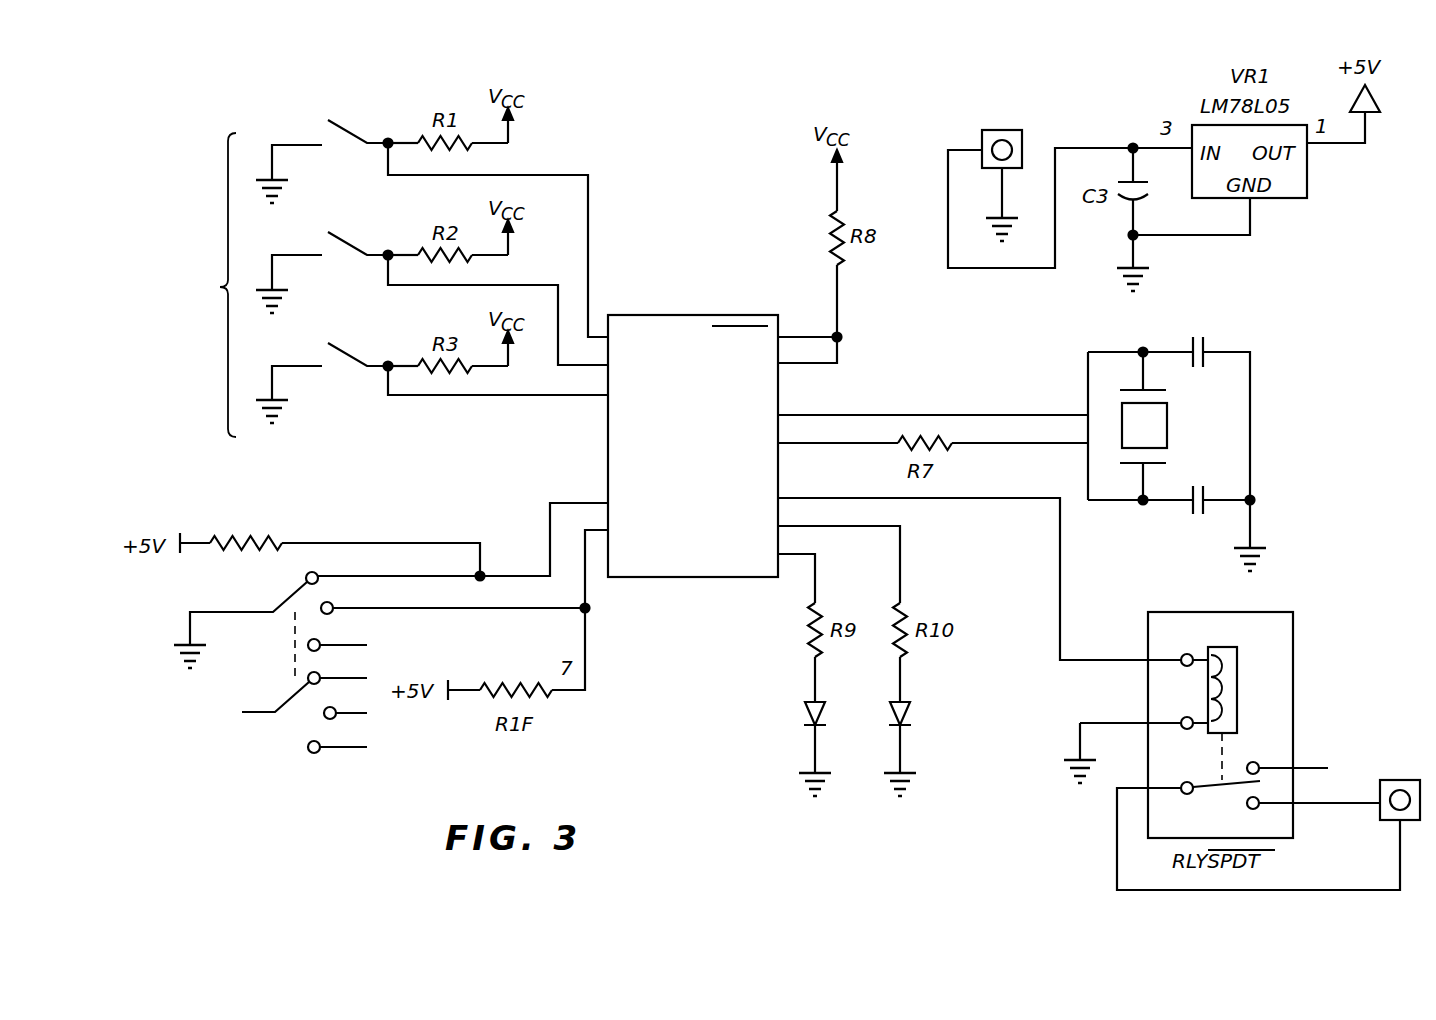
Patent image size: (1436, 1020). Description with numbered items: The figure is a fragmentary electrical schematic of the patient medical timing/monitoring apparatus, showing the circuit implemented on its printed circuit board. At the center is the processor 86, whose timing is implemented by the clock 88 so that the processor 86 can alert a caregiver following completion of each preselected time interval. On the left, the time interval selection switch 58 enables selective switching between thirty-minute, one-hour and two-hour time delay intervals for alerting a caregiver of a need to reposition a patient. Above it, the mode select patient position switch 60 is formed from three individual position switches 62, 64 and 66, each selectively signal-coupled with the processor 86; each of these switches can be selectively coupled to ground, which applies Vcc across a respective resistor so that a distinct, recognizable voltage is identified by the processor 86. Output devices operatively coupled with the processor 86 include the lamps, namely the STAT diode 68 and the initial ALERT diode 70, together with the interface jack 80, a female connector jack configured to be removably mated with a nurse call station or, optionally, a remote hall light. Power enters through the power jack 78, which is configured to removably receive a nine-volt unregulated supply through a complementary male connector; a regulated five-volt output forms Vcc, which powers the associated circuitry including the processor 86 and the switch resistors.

The time interval selection switch 58 is at (208, 708).
The mode select patient position switch 60 is at (295, 259).
The position switch 62 is at (358, 125).
The position switch 64 is at (358, 238).
The position switch 66 is at (358, 350).
The STAT diode 68 is at (886, 755).
The initial ALERT diode 70 is at (798, 758).
The power jack 78 is at (1030, 116).
The interface jack 80 is at (1400, 742).
The processor 86 is at (630, 315).
The clock 88 is at (1272, 425).